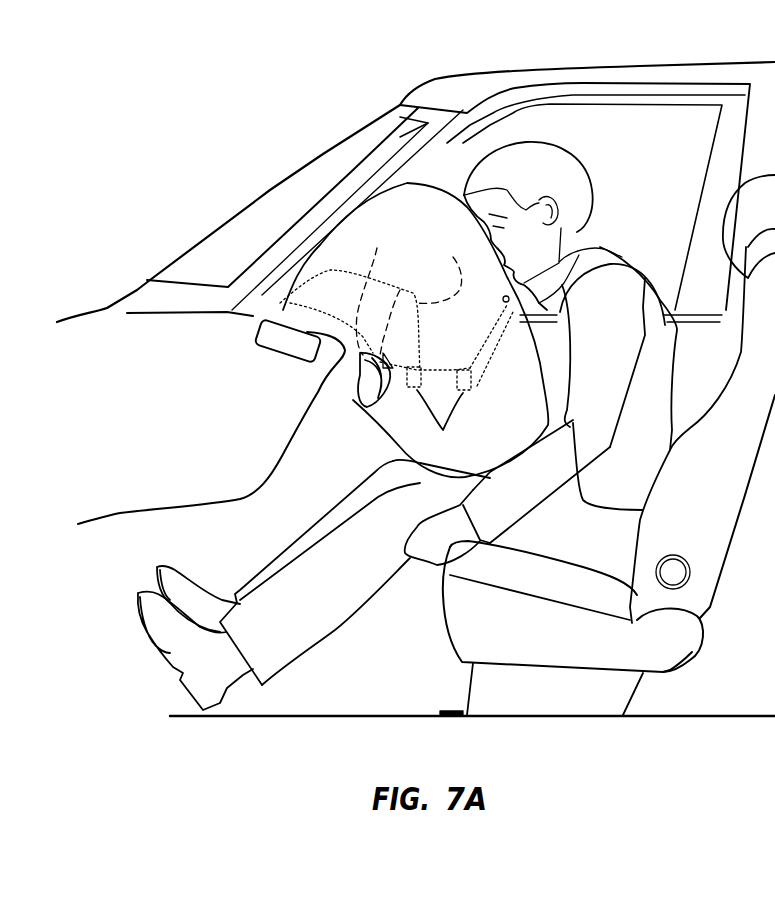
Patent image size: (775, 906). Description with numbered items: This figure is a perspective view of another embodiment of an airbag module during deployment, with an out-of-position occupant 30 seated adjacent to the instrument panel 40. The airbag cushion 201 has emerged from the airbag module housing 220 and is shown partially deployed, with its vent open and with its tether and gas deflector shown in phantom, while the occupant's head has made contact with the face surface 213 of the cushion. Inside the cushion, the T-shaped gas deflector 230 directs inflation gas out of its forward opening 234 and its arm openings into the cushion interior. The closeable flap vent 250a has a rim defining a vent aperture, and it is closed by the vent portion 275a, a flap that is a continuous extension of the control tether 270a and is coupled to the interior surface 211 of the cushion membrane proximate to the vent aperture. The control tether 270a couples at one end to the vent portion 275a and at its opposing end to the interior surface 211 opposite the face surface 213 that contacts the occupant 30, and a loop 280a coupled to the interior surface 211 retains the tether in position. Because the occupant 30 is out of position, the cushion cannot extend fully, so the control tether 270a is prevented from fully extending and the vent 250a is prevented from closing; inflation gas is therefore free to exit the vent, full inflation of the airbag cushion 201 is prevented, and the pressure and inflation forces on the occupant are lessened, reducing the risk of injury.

The airbag cushion 201 is at (375, 200).
The gas deflector 230 is at (330, 268).
The interior surface of airbag cushion membrane 211 is at (383, 290).
The forward opening of gas deflector 234 is at (439, 268).
The closeable flap vent 250a is at (418, 309).
The control tether 270a is at (437, 367).
The loop 280a is at (450, 425).
The vent portion 275a is at (362, 415).
The airbag module housing 220 is at (275, 350).
The instrument panel 40 is at (201, 429).
The occupant 30 is at (616, 344).
The face surface 213 is at (567, 243).